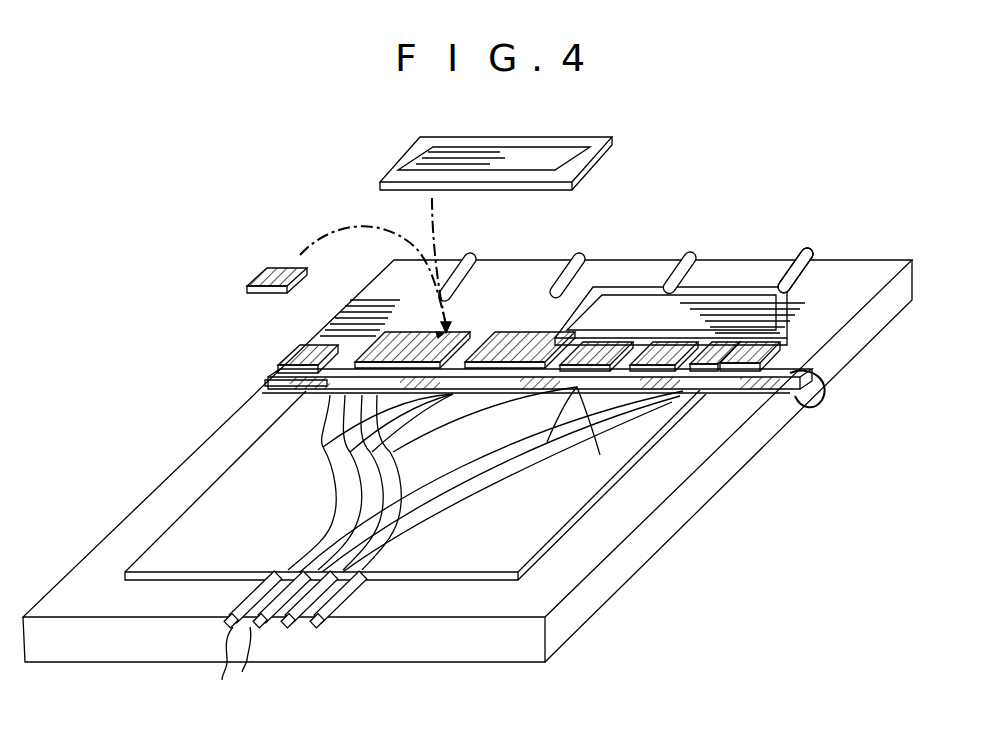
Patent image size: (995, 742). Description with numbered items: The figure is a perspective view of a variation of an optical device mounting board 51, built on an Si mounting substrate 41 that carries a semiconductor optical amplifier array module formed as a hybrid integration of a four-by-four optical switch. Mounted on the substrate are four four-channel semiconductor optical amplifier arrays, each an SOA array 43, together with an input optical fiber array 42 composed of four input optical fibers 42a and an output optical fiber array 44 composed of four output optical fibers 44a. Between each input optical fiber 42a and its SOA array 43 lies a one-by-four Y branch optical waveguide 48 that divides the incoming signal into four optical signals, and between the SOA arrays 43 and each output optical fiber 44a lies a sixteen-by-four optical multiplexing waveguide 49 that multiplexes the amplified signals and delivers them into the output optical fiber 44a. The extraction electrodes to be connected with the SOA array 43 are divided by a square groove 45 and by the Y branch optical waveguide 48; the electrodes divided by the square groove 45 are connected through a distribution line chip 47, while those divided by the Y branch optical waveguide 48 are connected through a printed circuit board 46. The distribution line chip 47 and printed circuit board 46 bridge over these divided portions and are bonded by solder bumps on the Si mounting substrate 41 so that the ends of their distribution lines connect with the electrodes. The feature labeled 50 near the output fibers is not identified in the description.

The Si mounting substrate 41 is at (590, 598).
The input optical fiber array 42 is at (826, 244).
The input optical fiber 42a is at (810, 250).
The semiconductor optical amplifier array 43 is at (688, 382).
The output optical fiber array 44 is at (205, 618).
The output optical fiber 44a is at (313, 593).
The square groove 45 is at (803, 374).
The printed circuit board 46 is at (404, 167).
The distribution line chip 47 is at (247, 276).
The Y branch optical waveguide 48 is at (362, 352).
The optical multiplexing waveguide 49 is at (340, 487).
The wires 50 is at (233, 640).
The optical device mounting board 51 is at (715, 533).